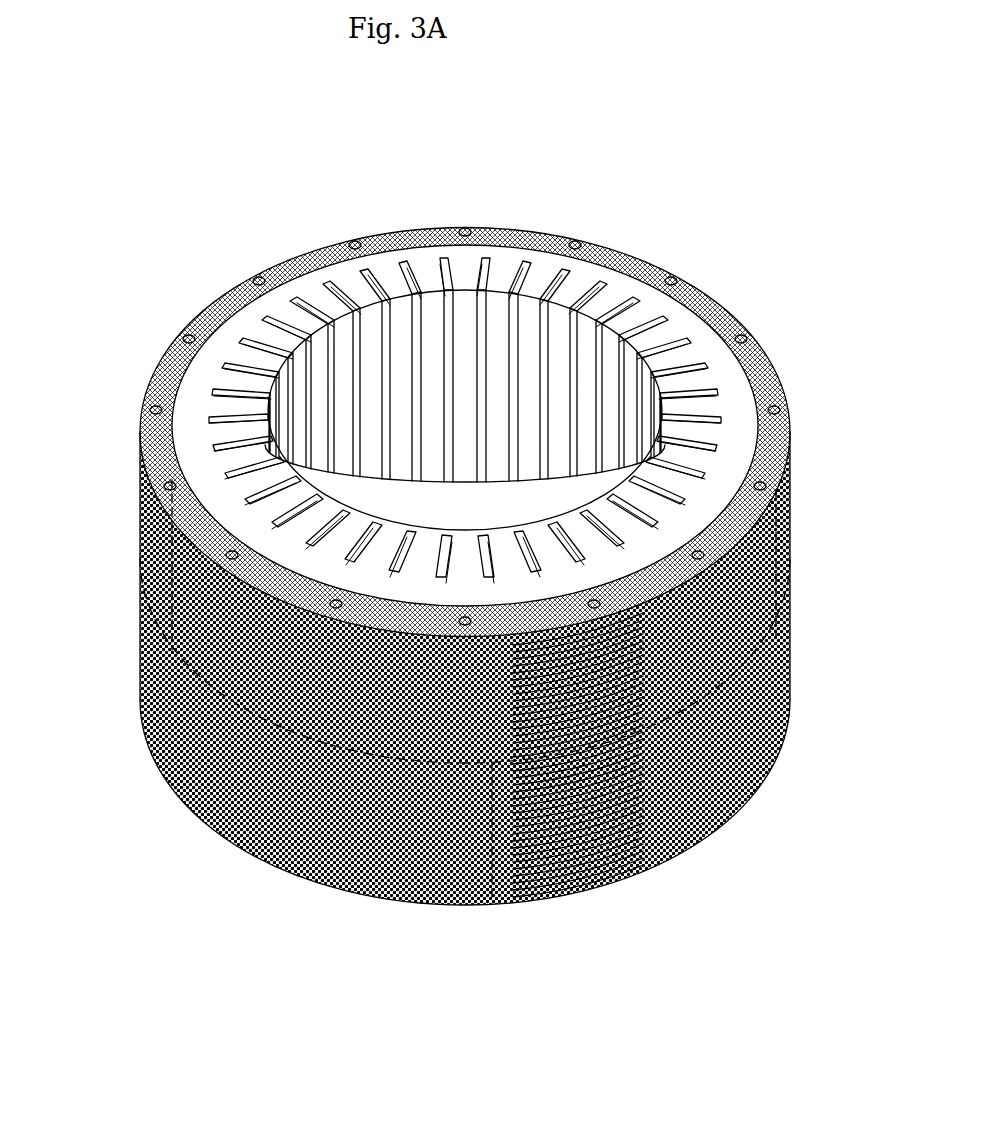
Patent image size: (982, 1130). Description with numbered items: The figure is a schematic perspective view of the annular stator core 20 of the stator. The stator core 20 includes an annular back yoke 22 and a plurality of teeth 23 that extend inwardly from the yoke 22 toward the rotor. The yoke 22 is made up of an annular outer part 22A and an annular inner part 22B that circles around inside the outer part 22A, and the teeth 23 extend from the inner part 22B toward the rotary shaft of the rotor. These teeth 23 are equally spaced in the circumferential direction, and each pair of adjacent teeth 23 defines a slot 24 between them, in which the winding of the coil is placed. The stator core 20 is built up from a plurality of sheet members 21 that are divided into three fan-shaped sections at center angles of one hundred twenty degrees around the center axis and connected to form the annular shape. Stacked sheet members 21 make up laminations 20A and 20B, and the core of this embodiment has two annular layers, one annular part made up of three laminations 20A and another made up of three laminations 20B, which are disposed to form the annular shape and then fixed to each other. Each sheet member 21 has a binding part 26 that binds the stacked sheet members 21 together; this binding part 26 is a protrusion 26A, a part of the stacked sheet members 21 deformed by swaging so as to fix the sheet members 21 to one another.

The stator core 20 is at (178, 201).
The lamination 20A is at (221, 672).
The lamination 20B is at (228, 782).
The sheet member 21 is at (628, 845).
The yoke 22 is at (58, 440).
The outer part 22A is at (706, 296).
The inner part 22B is at (638, 268).
The teeth 23 is at (243, 338).
The slot 24 is at (447, 528).
The binding part 26 is at (468, 229).
The protrusion 26A is at (777, 403).